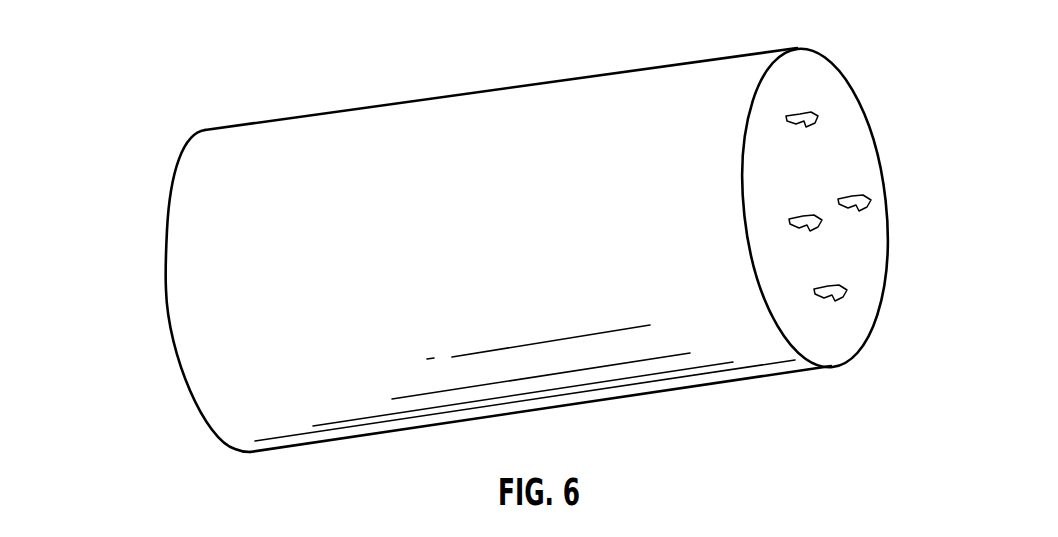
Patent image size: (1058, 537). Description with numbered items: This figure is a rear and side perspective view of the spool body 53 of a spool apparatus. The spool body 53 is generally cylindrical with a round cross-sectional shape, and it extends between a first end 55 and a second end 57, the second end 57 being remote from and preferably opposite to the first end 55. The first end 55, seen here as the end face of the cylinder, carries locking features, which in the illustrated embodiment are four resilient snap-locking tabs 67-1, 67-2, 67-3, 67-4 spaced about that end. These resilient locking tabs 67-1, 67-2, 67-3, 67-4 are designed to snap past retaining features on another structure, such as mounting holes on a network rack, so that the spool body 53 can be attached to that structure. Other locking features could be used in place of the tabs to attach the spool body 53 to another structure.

The spool body 53 is at (515, 240).
The first end 55 is at (820, 174).
The second end 57 is at (164, 278).
The resilient snap-locking tab 67-1 is at (800, 112).
The resilient snap-locking tab 67-2 is at (797, 228).
The resilient snap-locking tab 67-3 is at (852, 198).
The resilient snap-locking tab 67-4 is at (838, 290).